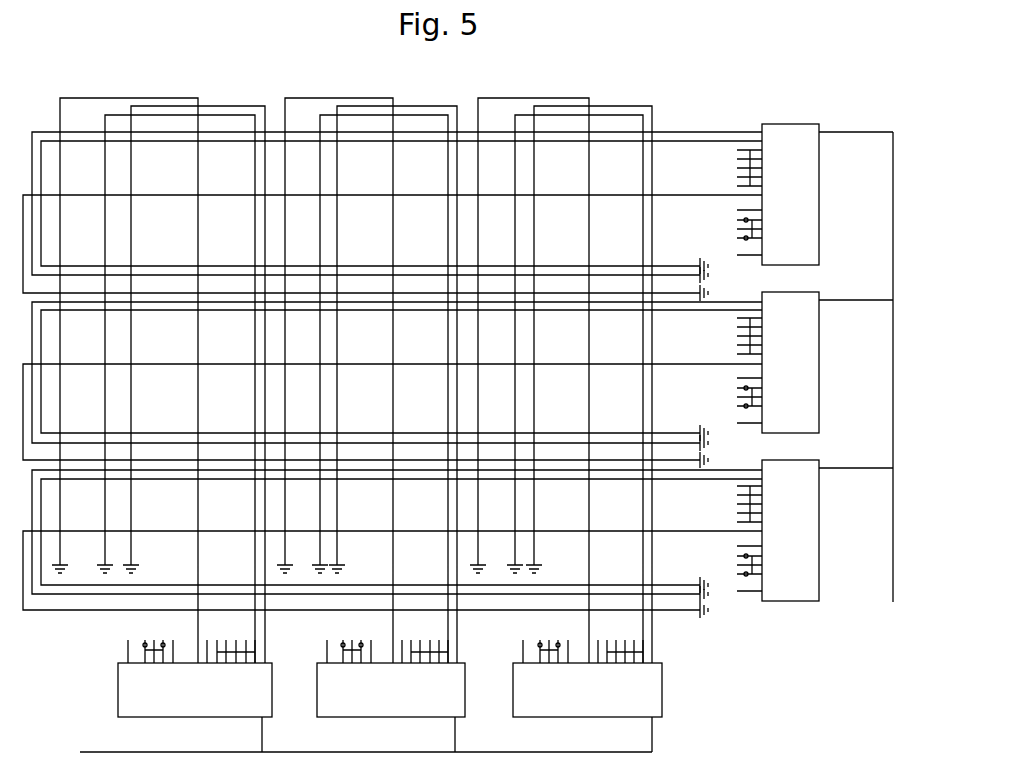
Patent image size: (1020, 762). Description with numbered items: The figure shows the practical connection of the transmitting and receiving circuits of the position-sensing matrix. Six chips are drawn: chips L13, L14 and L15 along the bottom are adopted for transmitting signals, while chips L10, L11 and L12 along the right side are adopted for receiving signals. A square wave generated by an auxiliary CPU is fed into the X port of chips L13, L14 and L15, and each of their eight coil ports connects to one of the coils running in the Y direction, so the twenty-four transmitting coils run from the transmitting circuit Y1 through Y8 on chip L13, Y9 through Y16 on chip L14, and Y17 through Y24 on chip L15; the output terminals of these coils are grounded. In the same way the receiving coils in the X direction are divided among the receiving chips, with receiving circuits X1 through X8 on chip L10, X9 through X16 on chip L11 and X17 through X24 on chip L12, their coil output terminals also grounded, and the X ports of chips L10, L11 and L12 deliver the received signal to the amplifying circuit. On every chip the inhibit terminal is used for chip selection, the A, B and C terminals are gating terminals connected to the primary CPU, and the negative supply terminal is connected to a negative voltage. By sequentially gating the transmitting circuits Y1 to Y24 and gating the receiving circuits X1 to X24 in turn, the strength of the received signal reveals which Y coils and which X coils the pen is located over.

The chip L10 is at (815, 194).
The chip L11 is at (815, 362).
The chip L12 is at (815, 530).
The chip L13 is at (587, 695).
The chip L14 is at (391, 695).
The chip L15 is at (195, 695).
The receiving circuit X1 is at (397, 202).
The receiving circuit X8 is at (392, 242).
The receiving circuit X9 is at (397, 371).
The receiving circuit X16 is at (392, 410).
The receiving circuit X17 is at (397, 530).
The receiving circuit X24 is at (392, 569).
The transmitting circuit Y1 is at (595, 384).
The transmitting circuit Y8 is at (535, 380).
The transmitting circuit Y9 is at (399, 384).
The transmitting circuit Y16 is at (341, 380).
The transmitting circuit Y17 is at (200, 384).
The transmitting circuit Y24 is at (131, 380).